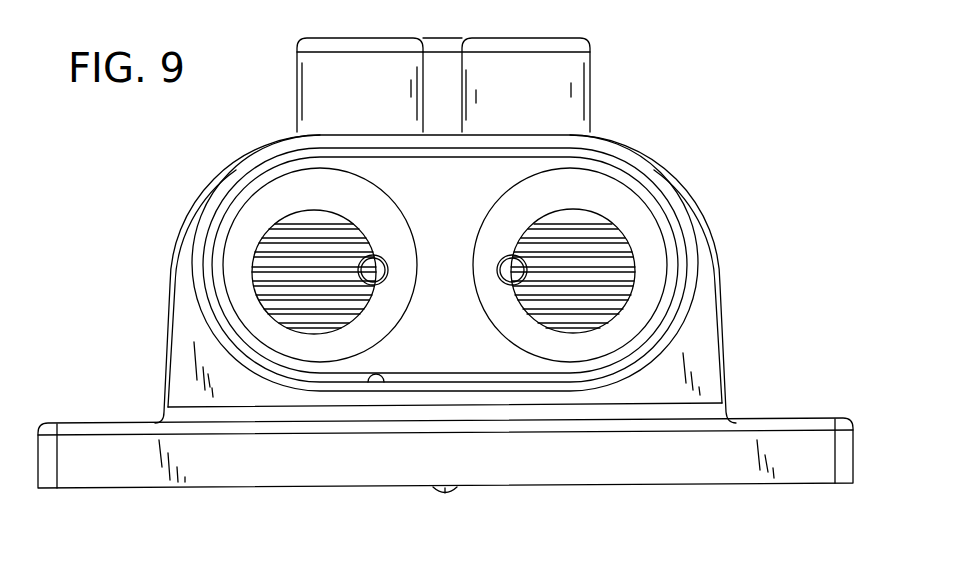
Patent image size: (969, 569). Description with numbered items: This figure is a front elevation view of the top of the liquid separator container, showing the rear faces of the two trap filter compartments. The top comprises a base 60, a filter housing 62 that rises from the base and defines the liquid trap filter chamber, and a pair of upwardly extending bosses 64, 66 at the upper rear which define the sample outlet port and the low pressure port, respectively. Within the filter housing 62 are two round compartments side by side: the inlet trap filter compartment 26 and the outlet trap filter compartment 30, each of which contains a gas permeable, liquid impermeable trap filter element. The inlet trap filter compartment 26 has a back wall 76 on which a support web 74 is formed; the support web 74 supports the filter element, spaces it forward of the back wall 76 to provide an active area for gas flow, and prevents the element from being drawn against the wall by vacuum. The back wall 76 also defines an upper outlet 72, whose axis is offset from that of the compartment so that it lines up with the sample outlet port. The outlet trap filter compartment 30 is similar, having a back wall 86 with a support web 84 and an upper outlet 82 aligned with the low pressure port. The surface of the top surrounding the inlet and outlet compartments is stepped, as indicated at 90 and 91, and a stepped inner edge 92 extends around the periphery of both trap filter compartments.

The inlet trap filter compartment 26 is at (657, 247).
The outlet trap filter compartment 30 is at (238, 263).
The base 60 is at (753, 413).
The filter housing 62 is at (188, 240).
The boss 64 is at (577, 62).
The boss 66 is at (323, 88).
The upper outlet 72 is at (508, 273).
The support web 74 is at (598, 222).
The back wall 76 is at (640, 213).
The upper outlet 82 is at (385, 262).
The support web 84 is at (287, 243).
The back wall 86 is at (240, 230).
The stepped surface 90 is at (672, 290).
The stepped surface 91 is at (237, 345).
The stepped inner edge 92 is at (372, 380).